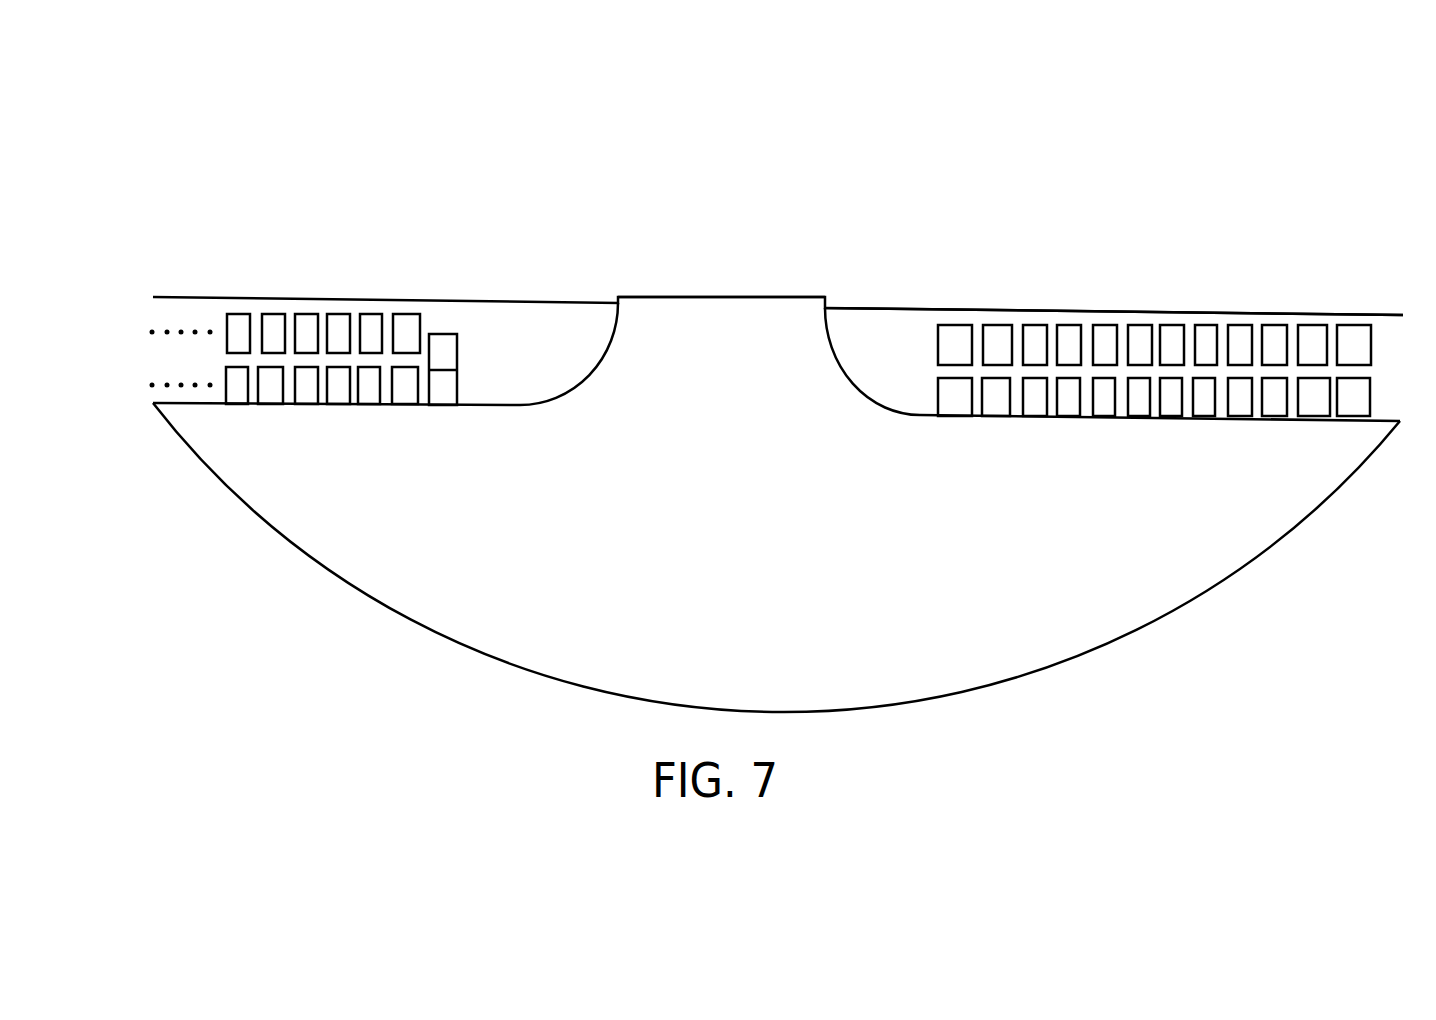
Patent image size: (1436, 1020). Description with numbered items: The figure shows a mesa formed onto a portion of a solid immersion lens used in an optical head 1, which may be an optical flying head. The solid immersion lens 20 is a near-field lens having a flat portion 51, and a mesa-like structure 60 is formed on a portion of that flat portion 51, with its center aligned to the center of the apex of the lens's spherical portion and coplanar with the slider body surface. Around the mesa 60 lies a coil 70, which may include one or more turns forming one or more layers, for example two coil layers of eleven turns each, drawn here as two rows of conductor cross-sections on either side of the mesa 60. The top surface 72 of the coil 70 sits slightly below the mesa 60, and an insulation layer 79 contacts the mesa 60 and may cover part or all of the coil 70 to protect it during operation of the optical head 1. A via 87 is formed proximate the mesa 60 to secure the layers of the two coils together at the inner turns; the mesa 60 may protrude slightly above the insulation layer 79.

The optical head 1 is at (345, 154).
The solid immersion lens 20 is at (1084, 654).
The flat portion 51 is at (330, 408).
The via 87 is at (465, 357).
The mesa 60 is at (676, 318).
The insulation layer 79 is at (903, 333).
The top surface 72 is at (1137, 332).
The coil 70 is at (1205, 408).